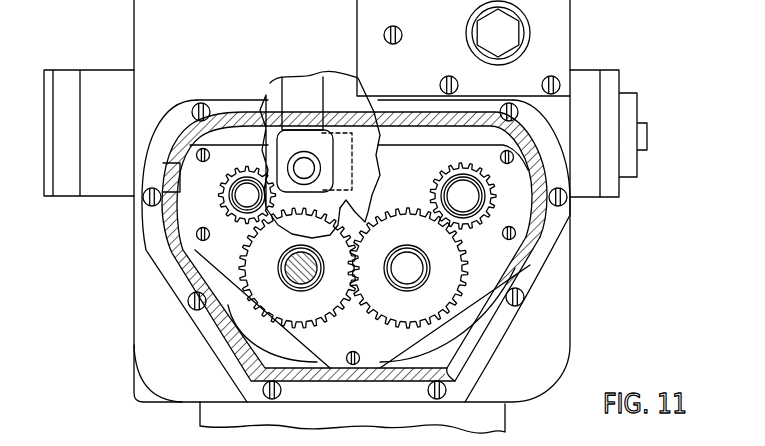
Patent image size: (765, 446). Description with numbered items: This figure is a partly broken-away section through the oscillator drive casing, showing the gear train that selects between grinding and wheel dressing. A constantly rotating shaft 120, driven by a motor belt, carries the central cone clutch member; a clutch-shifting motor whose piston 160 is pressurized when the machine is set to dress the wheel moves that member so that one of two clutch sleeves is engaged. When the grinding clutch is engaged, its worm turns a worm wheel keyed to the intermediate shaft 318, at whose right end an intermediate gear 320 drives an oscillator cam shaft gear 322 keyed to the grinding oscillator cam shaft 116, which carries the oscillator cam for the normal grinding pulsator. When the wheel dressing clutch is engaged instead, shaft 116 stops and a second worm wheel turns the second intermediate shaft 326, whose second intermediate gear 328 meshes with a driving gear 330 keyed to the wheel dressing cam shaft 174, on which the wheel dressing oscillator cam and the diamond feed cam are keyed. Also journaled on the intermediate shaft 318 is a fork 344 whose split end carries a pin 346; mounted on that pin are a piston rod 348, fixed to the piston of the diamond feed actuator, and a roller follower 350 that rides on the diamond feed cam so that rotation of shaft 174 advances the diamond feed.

The piston 160 is at (91, 66).
The shaft 120 is at (646, 124).
The piston rod 348 is at (306, 97).
The pin 346 is at (306, 167).
The fork 344 is at (360, 160).
The roller follower 350 is at (277, 200).
The intermediate shaft 318 is at (457, 191).
The second intermediate shaft 326 is at (240, 196).
The second intermediate gear 328 is at (226, 227).
The wheel dressing cam shaft 174 is at (311, 279).
The grinding oscillator cam shaft 116 is at (410, 271).
The driving gear 330 is at (323, 313).
The intermediate gear 320 is at (466, 238).
The oscillator cam shaft gear 322 is at (497, 342).